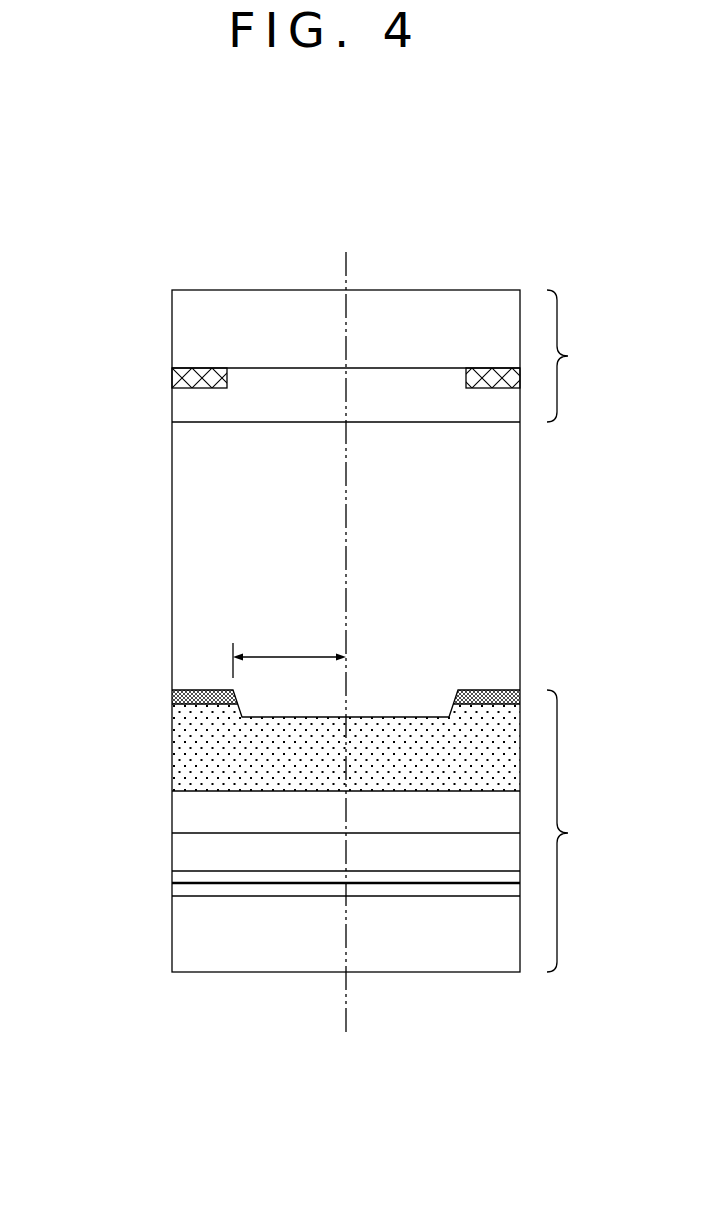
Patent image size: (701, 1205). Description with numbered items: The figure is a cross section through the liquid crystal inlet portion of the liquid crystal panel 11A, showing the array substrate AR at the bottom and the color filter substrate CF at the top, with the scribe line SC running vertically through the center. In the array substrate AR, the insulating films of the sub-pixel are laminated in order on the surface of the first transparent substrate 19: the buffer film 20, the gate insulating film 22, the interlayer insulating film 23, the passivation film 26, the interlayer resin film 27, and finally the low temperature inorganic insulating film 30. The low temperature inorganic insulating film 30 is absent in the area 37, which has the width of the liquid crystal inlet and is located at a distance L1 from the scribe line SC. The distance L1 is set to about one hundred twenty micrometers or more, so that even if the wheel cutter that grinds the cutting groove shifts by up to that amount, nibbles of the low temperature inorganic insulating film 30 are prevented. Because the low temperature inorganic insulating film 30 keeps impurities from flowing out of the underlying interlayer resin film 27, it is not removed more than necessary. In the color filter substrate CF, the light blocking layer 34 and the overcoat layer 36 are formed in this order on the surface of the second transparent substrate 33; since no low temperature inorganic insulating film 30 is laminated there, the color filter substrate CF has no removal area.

The liquid crystal panel 11A is at (100, 234).
The scribe line SC is at (345, 629).
The second transparent substrate 33 is at (180, 315).
The light blocking layer 34 is at (178, 380).
The overcoat layer 36 is at (180, 404).
The color filter substrate CF is at (578, 356).
The low temperature inorganic insulating film 30 is at (173, 700).
The area in which the low temperature inorganic insulating film is absent 37 is at (397, 702).
The distance L1 is at (289, 652).
The interlayer resin film 27 is at (187, 741).
The passivation film 26 is at (182, 810).
The interlayer insulating film 23 is at (183, 855).
The gate insulating film 22 is at (180, 880).
The buffer film 20 is at (182, 889).
The first transparent substrate 19 is at (182, 952).
The array substrate AR is at (579, 831).